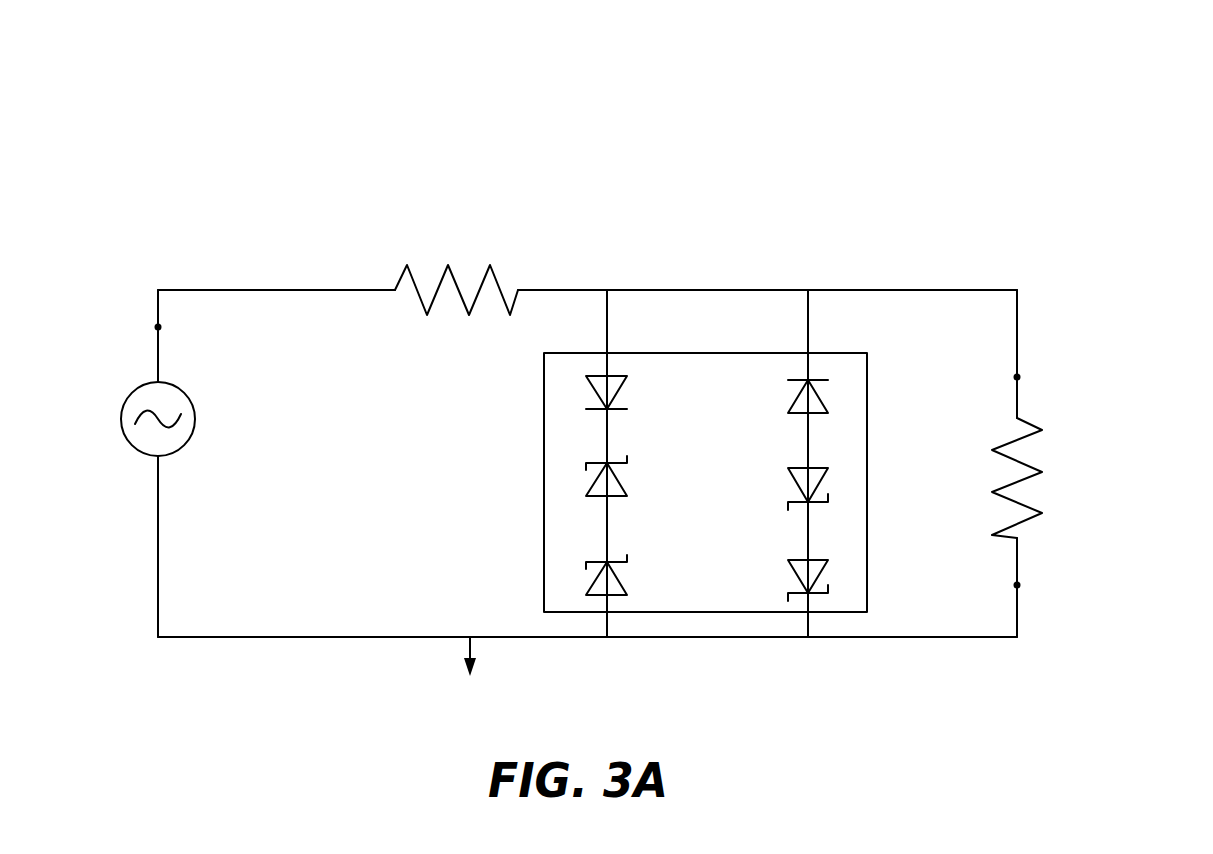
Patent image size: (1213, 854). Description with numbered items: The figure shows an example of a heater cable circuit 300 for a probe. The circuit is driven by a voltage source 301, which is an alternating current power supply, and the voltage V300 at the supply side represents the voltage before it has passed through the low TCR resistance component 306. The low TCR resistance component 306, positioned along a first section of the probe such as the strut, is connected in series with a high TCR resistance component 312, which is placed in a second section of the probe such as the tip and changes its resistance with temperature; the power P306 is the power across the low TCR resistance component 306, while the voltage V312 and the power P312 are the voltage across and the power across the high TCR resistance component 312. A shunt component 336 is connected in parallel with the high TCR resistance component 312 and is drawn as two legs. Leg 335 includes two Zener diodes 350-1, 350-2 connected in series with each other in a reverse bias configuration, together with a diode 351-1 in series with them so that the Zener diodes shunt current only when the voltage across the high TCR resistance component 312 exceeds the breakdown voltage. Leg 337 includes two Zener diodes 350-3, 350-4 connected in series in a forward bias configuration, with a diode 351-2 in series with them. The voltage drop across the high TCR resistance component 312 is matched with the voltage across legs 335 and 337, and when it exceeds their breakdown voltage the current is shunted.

The heater cable circuit 300 is at (308, 96).
The voltage V300 is at (155, 327).
The voltage source 301 is at (120, 419).
The low TCR resistance component 306 is at (427, 315).
The power P306 is at (522, 249).
The leg 335 is at (616, 310).
The leg 337 is at (817, 310).
The shunt component 336 is at (683, 612).
The diode 351-1 is at (596, 397).
The diode 351-2 is at (820, 392).
The Zener diode 350-1 is at (596, 478).
The Zener diode 350-2 is at (596, 578).
The Zener diode 350-3 is at (822, 490).
The Zener diode 350-4 is at (822, 582).
The high TCR resistance component 312 is at (1003, 537).
The power P312 is at (1070, 550).
The voltage V312 is at (1090, 514).